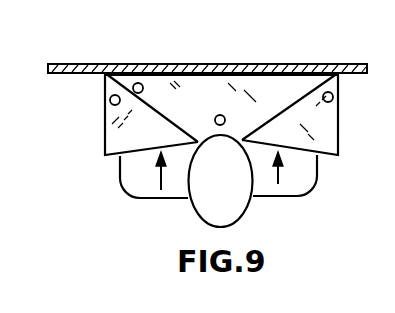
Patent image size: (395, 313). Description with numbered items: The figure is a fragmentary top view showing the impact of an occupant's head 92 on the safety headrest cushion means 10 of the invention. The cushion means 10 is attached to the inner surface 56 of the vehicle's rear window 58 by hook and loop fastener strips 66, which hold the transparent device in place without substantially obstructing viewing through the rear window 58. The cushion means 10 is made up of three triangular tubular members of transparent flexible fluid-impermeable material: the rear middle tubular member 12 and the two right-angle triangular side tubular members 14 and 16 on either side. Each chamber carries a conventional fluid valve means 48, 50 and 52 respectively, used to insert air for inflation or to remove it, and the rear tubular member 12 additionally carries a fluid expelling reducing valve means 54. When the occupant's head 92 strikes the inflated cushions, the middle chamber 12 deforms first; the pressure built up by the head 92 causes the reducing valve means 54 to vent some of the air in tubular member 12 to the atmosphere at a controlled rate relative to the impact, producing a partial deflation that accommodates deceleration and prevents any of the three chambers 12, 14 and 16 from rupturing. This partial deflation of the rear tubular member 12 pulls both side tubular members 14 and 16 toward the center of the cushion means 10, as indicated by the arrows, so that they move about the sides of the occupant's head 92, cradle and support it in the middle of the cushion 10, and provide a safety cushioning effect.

The cushion means 10 is at (96, 151).
The rear tubular member 12 is at (282, 104).
The side tubular member 14 is at (155, 139).
The side tubular member 16 is at (296, 140).
The fluid valve means 48 is at (142, 82).
The fluid valve means 50 is at (110, 100).
The fluid valve means 52 is at (333, 100).
The fluid expelling reducing valve means 54 is at (225, 114).
The inner surface 56 is at (352, 76).
The rear window 58 is at (98, 63).
The hook and loop fastener strips 66 is at (288, 63).
The occupant's head 92 is at (236, 191).